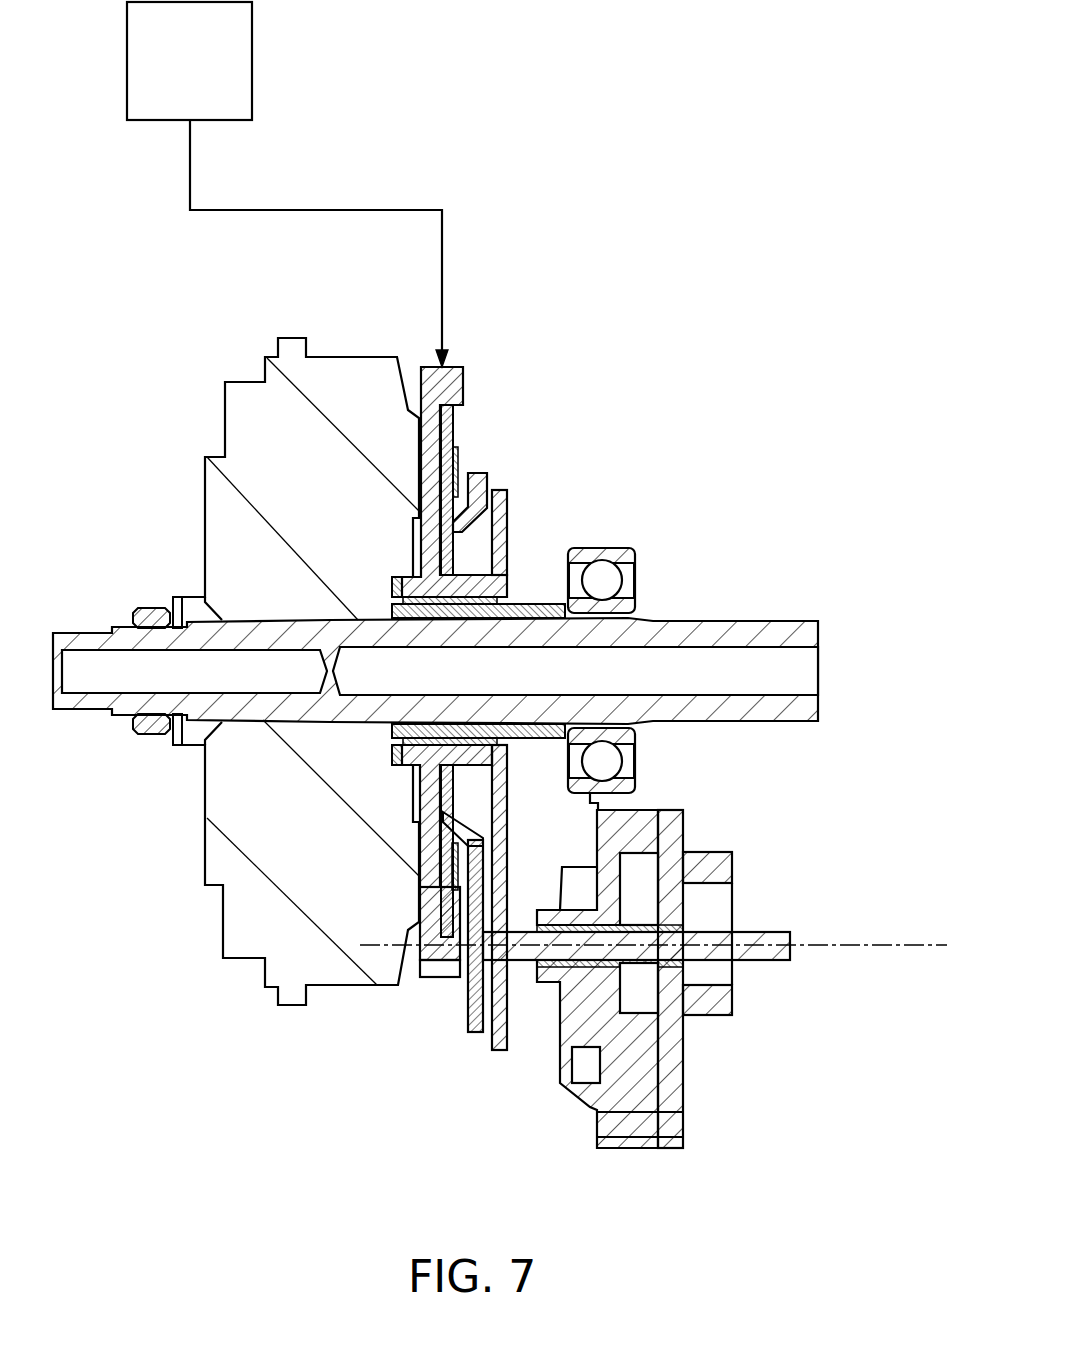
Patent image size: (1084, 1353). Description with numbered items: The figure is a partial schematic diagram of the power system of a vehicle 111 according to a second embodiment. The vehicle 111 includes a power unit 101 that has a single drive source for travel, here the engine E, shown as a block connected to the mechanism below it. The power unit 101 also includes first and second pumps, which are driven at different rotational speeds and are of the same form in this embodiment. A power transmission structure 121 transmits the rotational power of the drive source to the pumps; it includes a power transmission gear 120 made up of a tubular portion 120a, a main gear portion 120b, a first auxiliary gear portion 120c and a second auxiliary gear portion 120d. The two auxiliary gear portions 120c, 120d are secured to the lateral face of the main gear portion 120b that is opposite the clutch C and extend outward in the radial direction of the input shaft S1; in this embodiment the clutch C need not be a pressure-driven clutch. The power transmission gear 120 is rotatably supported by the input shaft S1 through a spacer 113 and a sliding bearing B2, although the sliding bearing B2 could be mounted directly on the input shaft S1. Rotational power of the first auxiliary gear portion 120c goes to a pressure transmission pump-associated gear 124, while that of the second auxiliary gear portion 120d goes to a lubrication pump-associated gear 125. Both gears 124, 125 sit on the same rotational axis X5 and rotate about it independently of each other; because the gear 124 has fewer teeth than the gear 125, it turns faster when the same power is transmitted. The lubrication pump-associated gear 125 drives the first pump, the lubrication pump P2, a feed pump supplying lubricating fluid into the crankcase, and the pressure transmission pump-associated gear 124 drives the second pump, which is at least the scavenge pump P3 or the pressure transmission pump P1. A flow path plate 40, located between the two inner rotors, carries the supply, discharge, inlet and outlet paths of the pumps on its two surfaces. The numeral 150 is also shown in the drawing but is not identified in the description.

The engine E is at (253, 60).
The clutch C is at (248, 375).
The power transmission structure 121 is at (473, 340).
The vehicle 111 is at (803, 400).
The power unit 101 is at (675, 488).
The power transmission gear 120 is at (421, 437).
The tubular portion 120a is at (400, 575).
The main gear portion 120b is at (438, 968).
The first auxiliary gear portion 120c is at (480, 472).
The second auxiliary gear portion 120d is at (500, 495).
The sliding bearing B2 is at (400, 598).
The spacer 113 is at (400, 608).
The input shaft S1 is at (85, 633).
The rotational axis X5 is at (868, 945).
The pressure transmission pump-associated gear 124 is at (478, 1032).
The lubrication pump-associated gear 125 is at (497, 1050).
The lubrication pump P2 is at (640, 1030).
The pressure transmission pump P1 is at (722, 1015).
The scavenge pump P3 is at (761, 983).
The flow path plate 40 is at (685, 1143).
The transmission 150 is at (828, 1153).